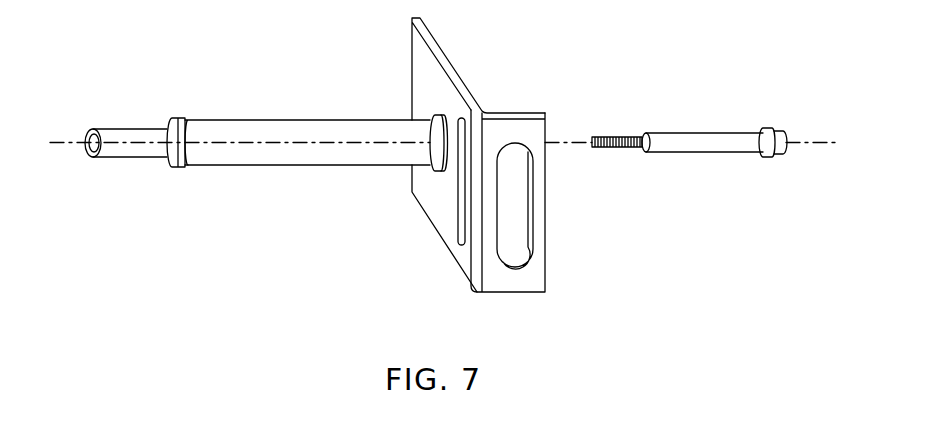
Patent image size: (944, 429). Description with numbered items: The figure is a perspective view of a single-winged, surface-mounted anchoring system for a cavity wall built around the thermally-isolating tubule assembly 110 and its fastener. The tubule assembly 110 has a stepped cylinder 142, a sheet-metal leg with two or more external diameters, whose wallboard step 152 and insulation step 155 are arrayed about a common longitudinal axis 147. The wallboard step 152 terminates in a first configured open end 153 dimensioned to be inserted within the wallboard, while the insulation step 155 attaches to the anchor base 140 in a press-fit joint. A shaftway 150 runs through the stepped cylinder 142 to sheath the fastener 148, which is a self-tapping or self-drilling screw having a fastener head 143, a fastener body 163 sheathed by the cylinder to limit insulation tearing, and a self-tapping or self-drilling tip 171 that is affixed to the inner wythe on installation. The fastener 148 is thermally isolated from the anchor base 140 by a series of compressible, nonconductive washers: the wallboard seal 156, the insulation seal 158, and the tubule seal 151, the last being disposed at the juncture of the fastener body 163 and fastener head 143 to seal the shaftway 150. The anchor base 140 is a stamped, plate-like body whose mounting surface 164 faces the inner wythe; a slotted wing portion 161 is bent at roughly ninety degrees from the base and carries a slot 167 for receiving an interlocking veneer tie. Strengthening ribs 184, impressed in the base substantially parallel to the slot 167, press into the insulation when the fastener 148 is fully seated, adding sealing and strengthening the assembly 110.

The tubule assembly 110 is at (288, 180).
The anchor base 140 is at (410, 178).
The stepped cylinder 142 is at (305, 127).
The fastener head 143 is at (786, 131).
The longitudinal axis 147 is at (255, 145).
The fastener 148 is at (680, 150).
The shaftway 150 is at (85, 140).
The tubule seal 151 is at (768, 155).
The wallboard step 152 is at (94, 141).
The first configured open end 153 is at (86, 130).
The insulation step 155 is at (337, 118).
The wallboard seal 156 is at (163, 124).
The insulation seal 158 is at (445, 118).
The slotted wing portion 161 is at (501, 218).
The fastener body 163 is at (723, 149).
The mounting surface 164 is at (418, 77).
The slot 167 is at (515, 208).
The self-tapping or self-drilling tip 171 is at (596, 138).
The strengthening ribs 184 is at (460, 235).